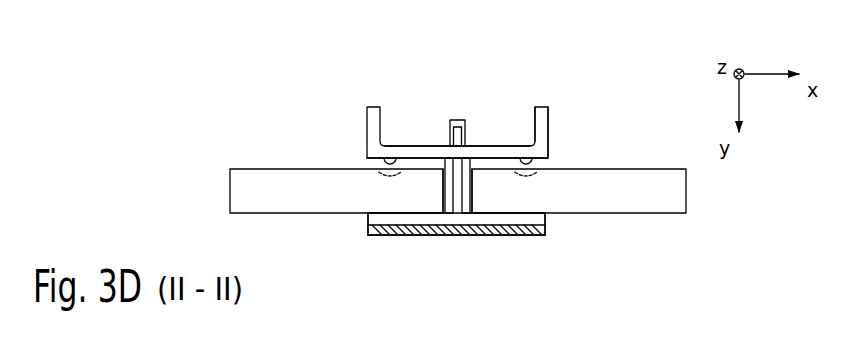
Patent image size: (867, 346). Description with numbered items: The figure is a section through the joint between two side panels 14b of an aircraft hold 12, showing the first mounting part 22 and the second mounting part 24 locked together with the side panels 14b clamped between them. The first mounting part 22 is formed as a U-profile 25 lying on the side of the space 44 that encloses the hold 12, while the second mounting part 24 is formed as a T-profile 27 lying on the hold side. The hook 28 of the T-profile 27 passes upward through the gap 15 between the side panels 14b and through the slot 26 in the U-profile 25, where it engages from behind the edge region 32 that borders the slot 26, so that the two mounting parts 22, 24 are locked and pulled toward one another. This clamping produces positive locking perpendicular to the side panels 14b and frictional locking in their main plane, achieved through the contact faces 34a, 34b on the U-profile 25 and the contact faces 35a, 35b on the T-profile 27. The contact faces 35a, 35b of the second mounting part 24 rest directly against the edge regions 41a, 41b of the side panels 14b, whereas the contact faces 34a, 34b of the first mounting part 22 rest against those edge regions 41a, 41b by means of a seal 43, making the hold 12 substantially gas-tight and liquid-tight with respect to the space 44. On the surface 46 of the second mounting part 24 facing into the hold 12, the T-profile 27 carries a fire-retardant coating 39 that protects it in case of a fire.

The hold 12 is at (444, 282).
The side panel 14b is at (262, 180).
The gap 15 is at (466, 214).
The first mounting part 22 is at (361, 106).
The second mounting part 24 is at (371, 239).
The U-profile 25 is at (550, 110).
The slot 26 is at (466, 140).
The T-profile 27 is at (513, 235).
The hook 28 is at (458, 120).
The edge region 32 is at (425, 146).
The contact face 34a is at (378, 167).
The contact face 34b is at (537, 167).
The contact face 35a is at (384, 205).
The contact face 35b is at (530, 205).
The coating 39 is at (392, 234).
The edge region 41a is at (438, 204).
The edge region 41b is at (518, 204).
The seal 43 is at (407, 152).
The space 44 is at (516, 42).
The surface 46 is at (458, 240).